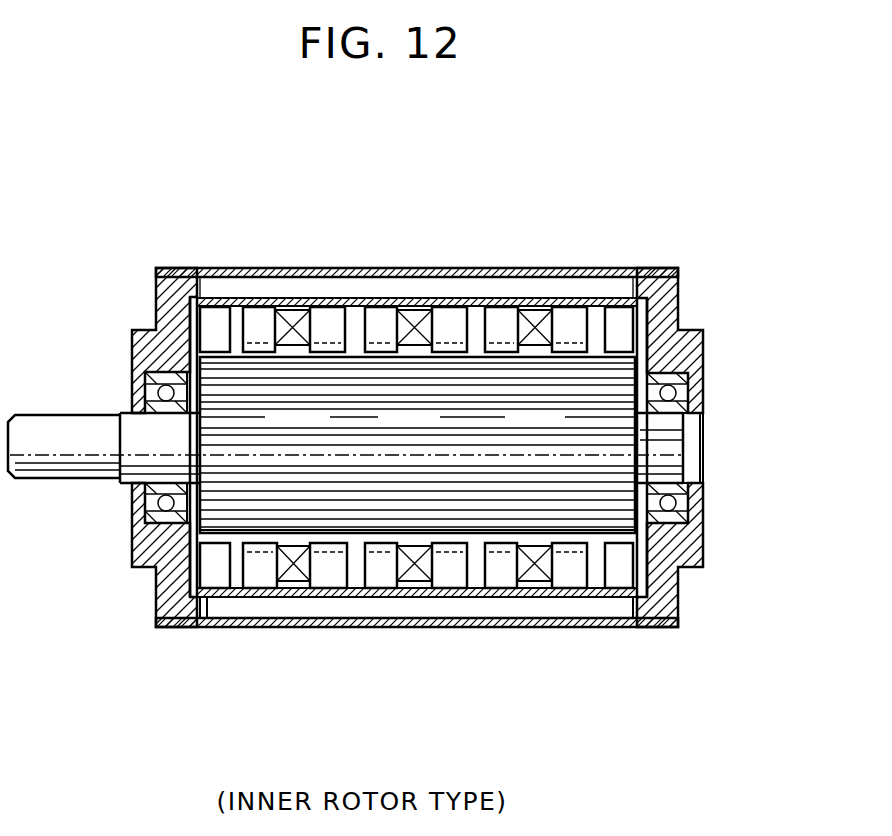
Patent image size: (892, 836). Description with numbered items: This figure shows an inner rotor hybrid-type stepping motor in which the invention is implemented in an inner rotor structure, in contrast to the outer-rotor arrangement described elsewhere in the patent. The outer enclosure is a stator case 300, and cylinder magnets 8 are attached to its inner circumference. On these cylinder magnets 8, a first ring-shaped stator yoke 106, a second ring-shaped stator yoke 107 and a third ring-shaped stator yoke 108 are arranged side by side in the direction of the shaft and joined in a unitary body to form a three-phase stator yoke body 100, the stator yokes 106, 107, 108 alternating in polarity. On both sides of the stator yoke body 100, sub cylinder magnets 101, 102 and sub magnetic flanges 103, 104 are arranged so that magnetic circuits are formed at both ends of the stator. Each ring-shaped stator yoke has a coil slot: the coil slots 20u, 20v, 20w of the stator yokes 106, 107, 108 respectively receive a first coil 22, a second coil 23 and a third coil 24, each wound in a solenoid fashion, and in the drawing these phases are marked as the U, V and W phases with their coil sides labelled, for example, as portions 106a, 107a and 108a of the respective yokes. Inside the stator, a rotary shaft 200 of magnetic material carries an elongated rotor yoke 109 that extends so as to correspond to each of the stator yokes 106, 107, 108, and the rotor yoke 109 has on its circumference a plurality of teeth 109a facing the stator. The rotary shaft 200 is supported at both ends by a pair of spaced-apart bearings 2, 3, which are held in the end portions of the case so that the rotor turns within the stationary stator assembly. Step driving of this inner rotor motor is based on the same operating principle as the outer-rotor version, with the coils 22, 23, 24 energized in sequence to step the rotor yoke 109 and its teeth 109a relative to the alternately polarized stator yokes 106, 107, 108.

The bearing 2 is at (147, 368).
The bearing 3 is at (690, 383).
The cylinder magnets 8 is at (345, 275).
The coil slot 20u is at (247, 275).
The coil slot 20v is at (363, 275).
The coil slot 20w is at (485, 275).
The first coil 22 is at (287, 573).
The second coil 23 is at (418, 580).
The third coil 24 is at (532, 580).
The three-phase stator yoke body 100 is at (585, 625).
The sub cylinder magnet 101 is at (215, 270).
The sub cylinder magnet 102 is at (620, 298).
The sub magnetic flange 103 is at (200, 322).
The sub magnetic flange 104 is at (625, 280).
The first ring-shaped stator yoke 106 is at (343, 273).
The U-phase coil portion 106a is at (328, 350).
The second ring-shaped stator yoke 107 is at (480, 275).
The V-phase coil portion 107a is at (445, 350).
The third ring-shaped stator yoke 108 is at (607, 273).
The W-phase coil portion 108a is at (565, 350).
The rotor yoke 109 is at (620, 512).
The teeth 109a is at (625, 467).
The rotary shaft 200 is at (42, 462).
The stator case 300 is at (158, 272).